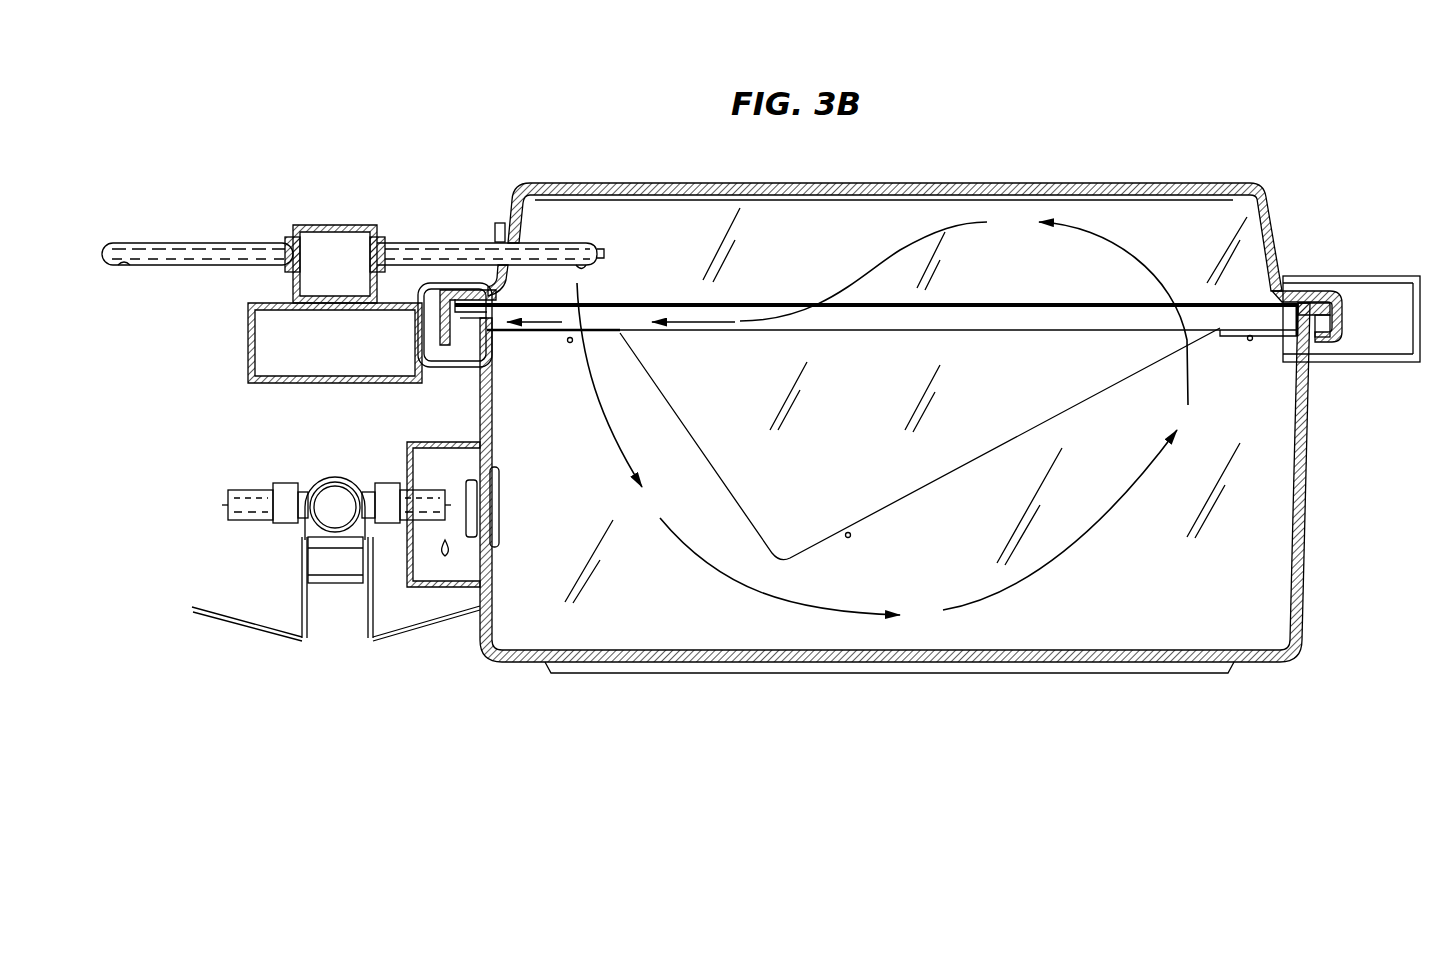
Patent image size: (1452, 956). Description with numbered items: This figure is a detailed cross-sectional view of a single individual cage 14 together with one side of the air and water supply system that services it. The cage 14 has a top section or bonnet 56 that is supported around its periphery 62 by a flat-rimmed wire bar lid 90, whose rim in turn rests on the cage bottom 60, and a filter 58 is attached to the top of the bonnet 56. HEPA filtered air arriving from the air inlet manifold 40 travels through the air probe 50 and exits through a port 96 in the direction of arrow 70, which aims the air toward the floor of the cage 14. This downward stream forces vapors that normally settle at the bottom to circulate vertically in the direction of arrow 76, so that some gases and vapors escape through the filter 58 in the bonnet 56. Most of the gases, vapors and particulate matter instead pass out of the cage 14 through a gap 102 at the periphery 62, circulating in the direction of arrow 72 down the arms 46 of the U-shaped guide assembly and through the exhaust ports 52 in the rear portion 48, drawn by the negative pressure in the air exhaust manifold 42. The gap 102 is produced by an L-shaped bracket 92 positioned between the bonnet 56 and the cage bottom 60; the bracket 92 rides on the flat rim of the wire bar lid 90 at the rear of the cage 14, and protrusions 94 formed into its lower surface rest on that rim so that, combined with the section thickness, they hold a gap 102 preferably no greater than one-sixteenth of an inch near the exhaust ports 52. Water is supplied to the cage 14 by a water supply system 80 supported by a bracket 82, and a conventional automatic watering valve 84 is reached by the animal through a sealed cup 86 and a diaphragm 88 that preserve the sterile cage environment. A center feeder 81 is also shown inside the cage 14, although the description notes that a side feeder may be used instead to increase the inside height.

The cage 14 is at (1342, 494).
The air inlet manifold 40 is at (338, 225).
The air exhaust manifold 42 is at (248, 335).
The arm 46 is at (1354, 276).
The rear portion 48 is at (418, 340).
The air probe 50 is at (203, 244).
The exhaust port 52 is at (418, 300).
The bonnet 56 is at (1276, 225).
The filter 58 is at (1150, 197).
The cage bottom 60 is at (1300, 580).
The periphery 62 is at (1342, 318).
The arrow 70 is at (598, 412).
The arrow 72 is at (540, 322).
The arrow 76 is at (1140, 248).
The water supply system 80 is at (228, 557).
The center feeder 81 is at (1035, 432).
The bracket 82 is at (368, 622).
The automatic watering valve 84 is at (252, 490).
The sealed cup 86 is at (410, 560).
The diaphragm 88 is at (499, 517).
The wire bar lid 90 is at (985, 300).
The L-shaped bracket 92 is at (514, 273).
The protrusion 94 is at (490, 333).
The port 96 is at (580, 264).
The gap 102 is at (492, 290).